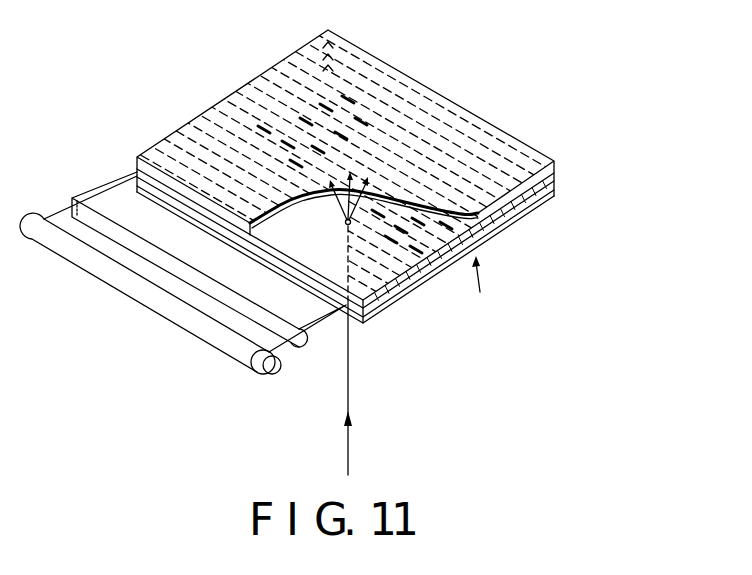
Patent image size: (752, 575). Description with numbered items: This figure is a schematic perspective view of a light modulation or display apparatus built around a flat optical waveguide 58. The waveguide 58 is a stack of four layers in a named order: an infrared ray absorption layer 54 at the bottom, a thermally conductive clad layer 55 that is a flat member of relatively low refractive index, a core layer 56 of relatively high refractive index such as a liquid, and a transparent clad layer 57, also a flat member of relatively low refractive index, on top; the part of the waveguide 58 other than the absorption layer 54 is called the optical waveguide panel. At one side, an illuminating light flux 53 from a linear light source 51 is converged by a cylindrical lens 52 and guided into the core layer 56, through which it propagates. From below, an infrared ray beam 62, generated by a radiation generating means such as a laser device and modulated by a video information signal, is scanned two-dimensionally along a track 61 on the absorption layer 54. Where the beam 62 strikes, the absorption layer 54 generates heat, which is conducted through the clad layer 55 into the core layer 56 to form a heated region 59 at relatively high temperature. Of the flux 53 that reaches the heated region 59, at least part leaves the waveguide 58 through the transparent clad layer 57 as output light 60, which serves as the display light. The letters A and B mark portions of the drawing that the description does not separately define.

The linear light source 51 is at (150, 296).
The cylindrical lens 52 is at (303, 347).
The illuminating light flux 53 is at (107, 184).
The infrared ray absorption layer 54 is at (556, 196).
The thermally conductive clad layer 55 is at (400, 297).
The core layer 56 is at (557, 174).
The transparent clad layer 57 is at (556, 165).
The flat optical waveguide 58 is at (381, 52).
The heated region 59 is at (343, 224).
The output light 60 is at (323, 205).
The track 61 is at (418, 130).
The infrared ray beam 62 is at (350, 397).
The direction A is at (483, 289).
The region B is at (245, 100).